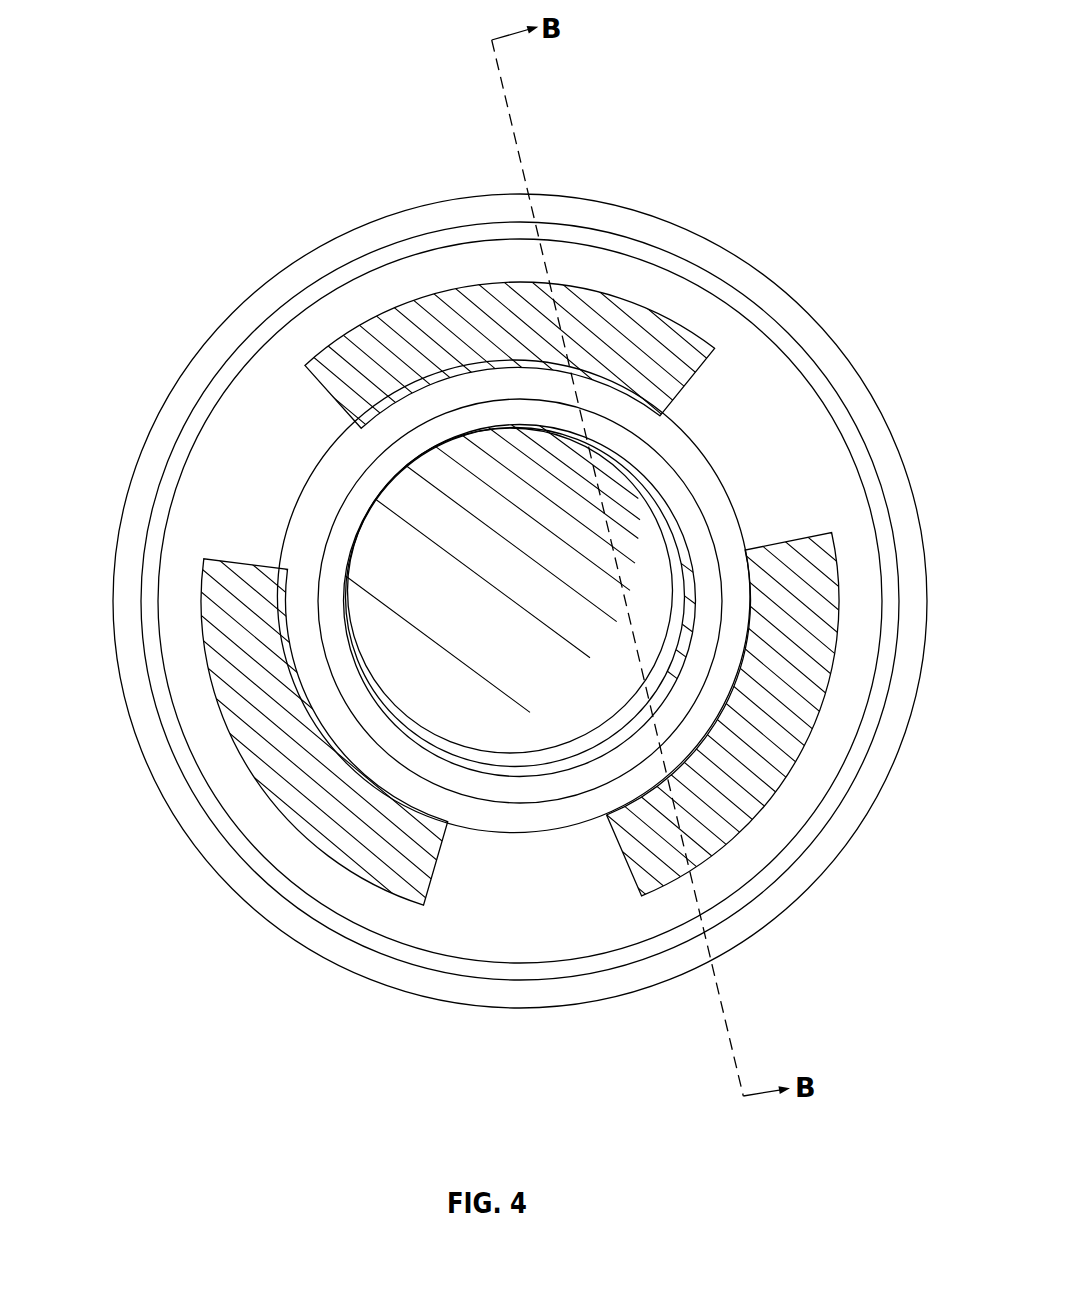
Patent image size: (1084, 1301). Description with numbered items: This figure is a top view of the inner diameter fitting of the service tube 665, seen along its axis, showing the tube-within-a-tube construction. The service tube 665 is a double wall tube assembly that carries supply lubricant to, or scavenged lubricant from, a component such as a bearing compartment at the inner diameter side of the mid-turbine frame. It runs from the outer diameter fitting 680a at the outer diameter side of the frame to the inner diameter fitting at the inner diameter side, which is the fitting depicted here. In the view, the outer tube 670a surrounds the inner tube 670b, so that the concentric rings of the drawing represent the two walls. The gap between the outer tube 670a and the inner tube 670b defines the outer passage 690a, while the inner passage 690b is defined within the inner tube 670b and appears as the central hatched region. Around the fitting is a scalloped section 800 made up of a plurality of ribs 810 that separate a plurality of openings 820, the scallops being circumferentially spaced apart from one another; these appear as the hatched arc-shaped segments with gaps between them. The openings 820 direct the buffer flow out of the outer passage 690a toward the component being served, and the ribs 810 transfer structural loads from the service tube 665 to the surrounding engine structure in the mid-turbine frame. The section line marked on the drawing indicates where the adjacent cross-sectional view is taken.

The service tube 665 is at (879, 808).
The outer tube 670a is at (819, 325).
The inner tube 670b is at (302, 643).
The outer diameter fitting 680a is at (470, 1036).
The outer passage 690a is at (328, 828).
The inner passage 690b is at (380, 576).
The scalloped section 800 is at (112, 750).
The ribs 810 is at (603, 900).
The openings 820 is at (367, 313).